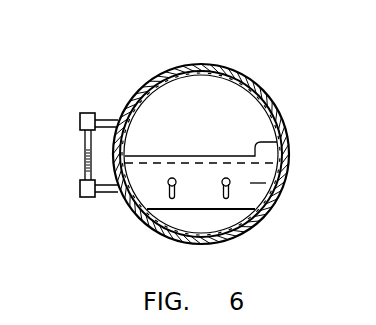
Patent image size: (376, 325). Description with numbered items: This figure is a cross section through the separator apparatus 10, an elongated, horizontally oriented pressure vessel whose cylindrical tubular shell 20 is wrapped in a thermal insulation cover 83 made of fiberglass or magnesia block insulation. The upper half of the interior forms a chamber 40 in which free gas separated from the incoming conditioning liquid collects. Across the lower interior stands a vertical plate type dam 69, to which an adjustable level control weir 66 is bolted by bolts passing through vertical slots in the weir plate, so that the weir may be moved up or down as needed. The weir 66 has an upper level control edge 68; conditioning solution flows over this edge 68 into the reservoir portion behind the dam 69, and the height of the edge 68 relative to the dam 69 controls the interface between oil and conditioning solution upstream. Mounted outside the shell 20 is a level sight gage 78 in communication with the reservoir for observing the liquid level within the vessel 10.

The separator apparatus 10 is at (186, 60).
The thermal insulation cover 83 is at (236, 71).
The cylindrical tubular shell 20 is at (271, 103).
The chamber 40 is at (207, 111).
The upper level control edge 68 is at (293, 133).
The vertical plate type dam 69 is at (184, 163).
The adjustable level control weir 66 is at (284, 189).
The level sight gage 78 is at (84, 145).